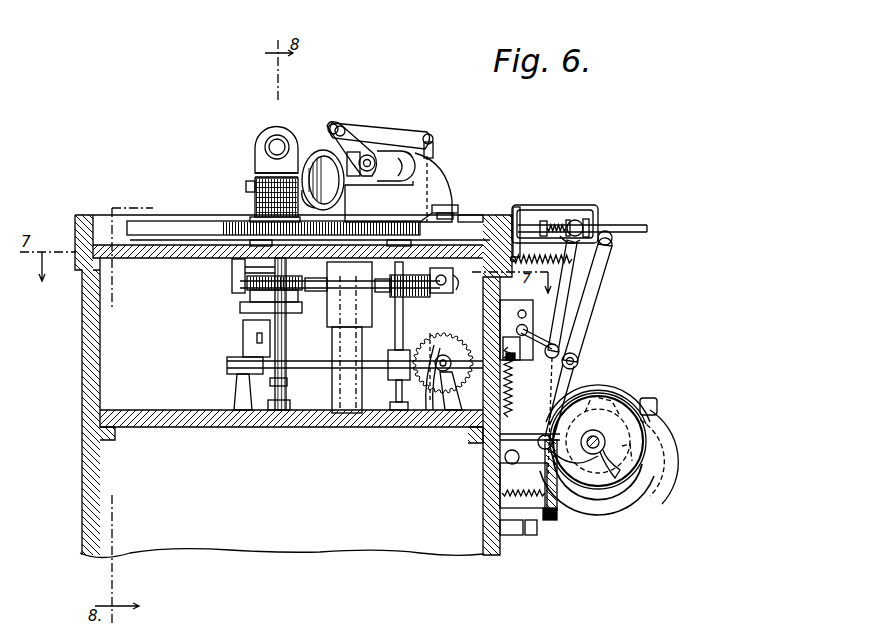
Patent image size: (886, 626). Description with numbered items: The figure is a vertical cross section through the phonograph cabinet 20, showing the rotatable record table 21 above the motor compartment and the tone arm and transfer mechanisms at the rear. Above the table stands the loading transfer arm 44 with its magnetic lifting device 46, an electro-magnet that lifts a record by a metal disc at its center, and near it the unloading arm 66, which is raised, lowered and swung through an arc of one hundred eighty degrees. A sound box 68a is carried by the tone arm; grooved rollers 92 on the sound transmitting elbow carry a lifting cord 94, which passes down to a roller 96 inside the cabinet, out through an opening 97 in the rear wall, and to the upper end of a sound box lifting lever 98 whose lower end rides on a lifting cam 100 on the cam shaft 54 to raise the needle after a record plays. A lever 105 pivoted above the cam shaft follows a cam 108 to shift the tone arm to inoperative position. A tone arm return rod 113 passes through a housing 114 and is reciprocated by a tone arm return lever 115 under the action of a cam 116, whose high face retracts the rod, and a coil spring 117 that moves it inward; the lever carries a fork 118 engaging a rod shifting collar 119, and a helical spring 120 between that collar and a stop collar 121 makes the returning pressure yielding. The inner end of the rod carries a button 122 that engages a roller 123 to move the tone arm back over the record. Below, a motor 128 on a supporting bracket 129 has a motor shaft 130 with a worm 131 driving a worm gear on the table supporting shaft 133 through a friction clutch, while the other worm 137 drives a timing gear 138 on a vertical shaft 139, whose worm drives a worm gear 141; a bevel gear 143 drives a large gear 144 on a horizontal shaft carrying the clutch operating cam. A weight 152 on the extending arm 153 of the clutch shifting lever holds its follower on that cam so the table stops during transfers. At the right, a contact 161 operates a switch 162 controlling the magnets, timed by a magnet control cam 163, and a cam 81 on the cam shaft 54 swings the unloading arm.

The cabinet 20 is at (91, 356).
The record table 21 is at (146, 230).
The loading transfer arm 44 is at (240, 138).
The magnetic lifting device 46 is at (256, 201).
The unloading arm 66 is at (279, 134).
The disc 68a is at (314, 147).
The grooved rollers 92 is at (339, 124).
The lifting cord 94 is at (372, 125).
The roller 96 is at (443, 287).
The opening 97 is at (487, 300).
The sound box lifting lever 98 is at (533, 297).
The lifting cam 100 is at (650, 430).
The lever 105 is at (566, 289).
The cam 108 is at (610, 508).
The tone arm return rod 113 is at (628, 227).
The housing 114 is at (585, 207).
The tone arm return lever 115 is at (584, 312).
The cam 116 is at (640, 463).
The coil spring 117 is at (573, 257).
The fork 118 is at (577, 220).
The rod shifting collar 119 is at (565, 226).
The helical spring 120 is at (542, 222).
The stop collar 121 is at (512, 207).
The button 122 is at (481, 220).
The roller 123 is at (453, 232).
The motor 128 is at (349, 337).
The supporting bracket 129 is at (329, 412).
The motor shaft 130 is at (316, 300).
The worm 131 is at (255, 300).
The table supporting shaft 133 is at (232, 268).
The worm 137 is at (396, 318).
The timing gear 138 is at (432, 293).
The shaft 139 is at (395, 390).
The worm gear 141 is at (455, 392).
The bevel gear 143 is at (432, 395).
The large gear 144 is at (418, 420).
The weight 152 is at (245, 328).
The extending arm 153 is at (257, 340).
The contact 161 is at (535, 528).
The switch 162 is at (508, 536).
The magnet control cam 163 is at (643, 413).
The cam shaft 54 is at (628, 465).
The cam 81 is at (607, 383).